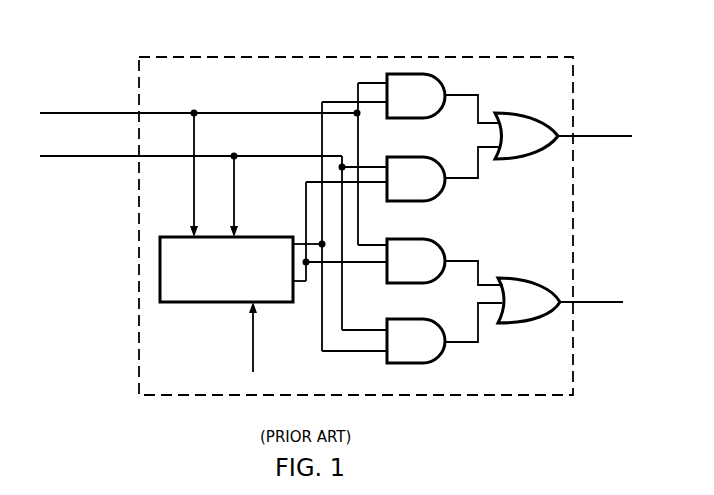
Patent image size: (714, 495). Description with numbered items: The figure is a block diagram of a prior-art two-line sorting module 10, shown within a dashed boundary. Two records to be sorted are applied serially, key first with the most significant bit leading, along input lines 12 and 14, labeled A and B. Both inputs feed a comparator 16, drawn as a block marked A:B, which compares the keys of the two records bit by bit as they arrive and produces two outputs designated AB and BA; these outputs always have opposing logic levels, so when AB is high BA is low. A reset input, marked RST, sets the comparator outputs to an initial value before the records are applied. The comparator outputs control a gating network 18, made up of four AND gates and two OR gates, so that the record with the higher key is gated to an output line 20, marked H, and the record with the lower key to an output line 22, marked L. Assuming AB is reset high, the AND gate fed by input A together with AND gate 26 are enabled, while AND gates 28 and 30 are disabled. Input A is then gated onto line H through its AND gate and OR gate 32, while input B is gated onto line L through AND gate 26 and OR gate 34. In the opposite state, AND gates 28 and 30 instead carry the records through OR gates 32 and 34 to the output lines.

The sorting module 10 is at (357, 57).
The input line 12 is at (80, 112).
The input line 14 is at (78, 157).
The comparator 16 is at (192, 304).
The gating network 18 is at (473, 251).
The output line 20 is at (590, 135).
The output line 22 is at (603, 302).
The AND gate 26 is at (418, 332).
The AND gate 28 is at (427, 185).
The AND gate 30 is at (425, 257).
The OR gate 32 is at (520, 125).
The OR gate 34 is at (520, 293).